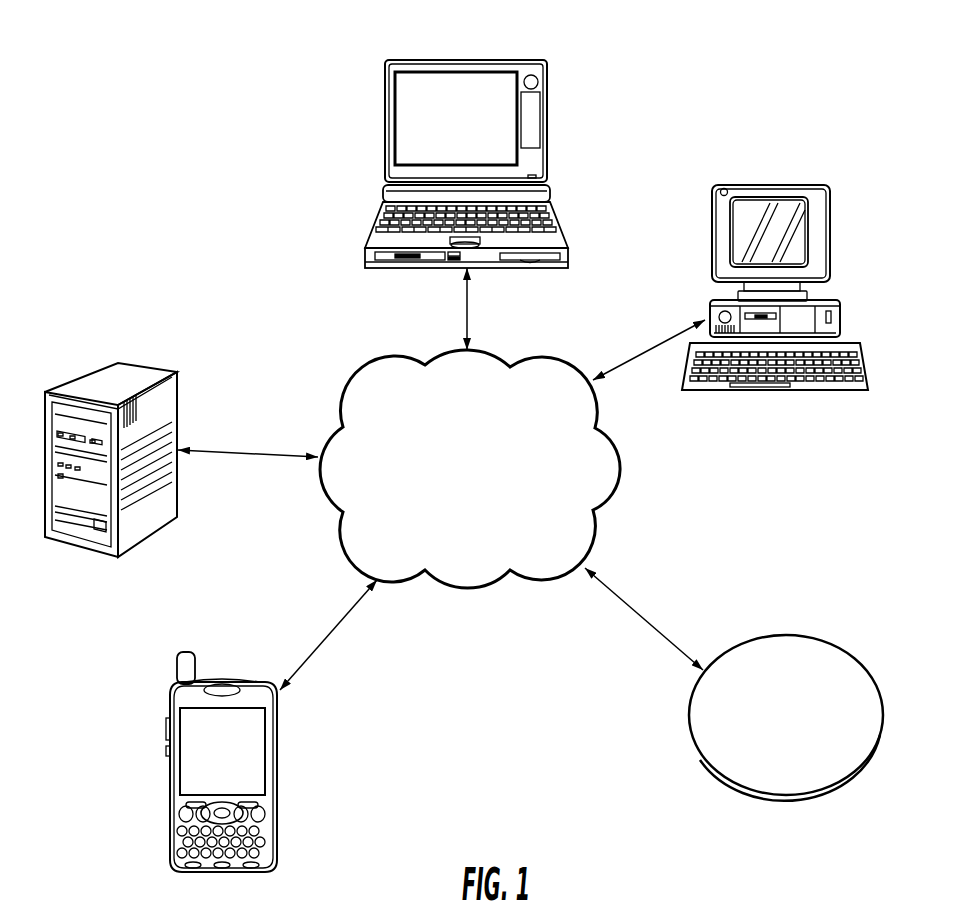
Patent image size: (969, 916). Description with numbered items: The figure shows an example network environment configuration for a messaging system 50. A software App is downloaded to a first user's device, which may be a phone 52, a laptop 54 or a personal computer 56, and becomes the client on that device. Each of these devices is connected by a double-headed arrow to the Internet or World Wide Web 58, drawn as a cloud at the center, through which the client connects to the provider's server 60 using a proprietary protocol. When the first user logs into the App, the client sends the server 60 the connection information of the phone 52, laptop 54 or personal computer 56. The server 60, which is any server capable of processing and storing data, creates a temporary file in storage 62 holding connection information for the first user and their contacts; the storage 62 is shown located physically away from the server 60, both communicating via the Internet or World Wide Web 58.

The messaging system 50 is at (266, 246).
The phone 52 is at (169, 706).
The laptop 54 is at (384, 122).
The personal computer 56 is at (711, 250).
The Internet or World Wide Web 58 is at (470, 469).
The server 60 is at (96, 371).
The storage 62 is at (786, 718).